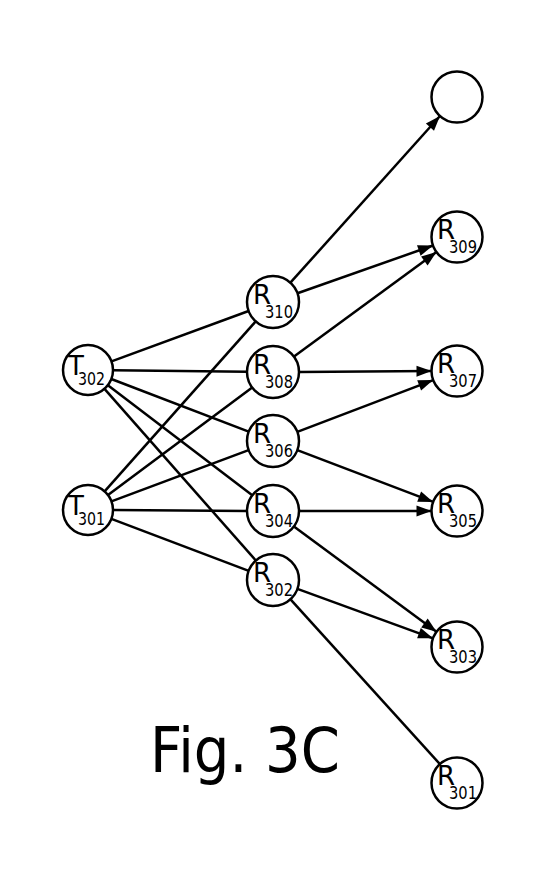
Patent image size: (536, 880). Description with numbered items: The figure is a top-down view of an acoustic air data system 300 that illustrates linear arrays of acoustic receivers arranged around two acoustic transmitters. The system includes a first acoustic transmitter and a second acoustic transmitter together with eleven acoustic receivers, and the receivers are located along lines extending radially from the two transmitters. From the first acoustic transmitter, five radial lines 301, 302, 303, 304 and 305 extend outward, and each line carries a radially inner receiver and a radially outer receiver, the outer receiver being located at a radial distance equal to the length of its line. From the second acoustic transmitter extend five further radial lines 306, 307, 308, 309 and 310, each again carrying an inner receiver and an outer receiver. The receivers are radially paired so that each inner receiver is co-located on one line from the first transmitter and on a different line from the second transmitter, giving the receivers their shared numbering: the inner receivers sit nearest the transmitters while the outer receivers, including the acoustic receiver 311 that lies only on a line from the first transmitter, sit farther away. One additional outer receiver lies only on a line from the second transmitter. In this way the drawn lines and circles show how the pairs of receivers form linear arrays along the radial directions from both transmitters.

The acoustic air data system 300 is at (353, 102).
The radial line / acoustic receiver 301 is at (160, 537).
The radial line / acoustic receiver 302 is at (197, 495).
The radial line / acoustic receiver 303 is at (362, 412).
The radial line / acoustic receiver 304 is at (390, 289).
The radial line / acoustic receiver 305 is at (348, 218).
The radial line / acoustic receiver 306 is at (333, 650).
The radial line / acoustic receiver 307 is at (343, 560).
The radial line / acoustic receiver 308 is at (363, 472).
The radial line / acoustic receiver 309 is at (348, 372).
The radial line / acoustic receiver 310 is at (182, 338).
The acoustic receiver 311 is at (457, 97).